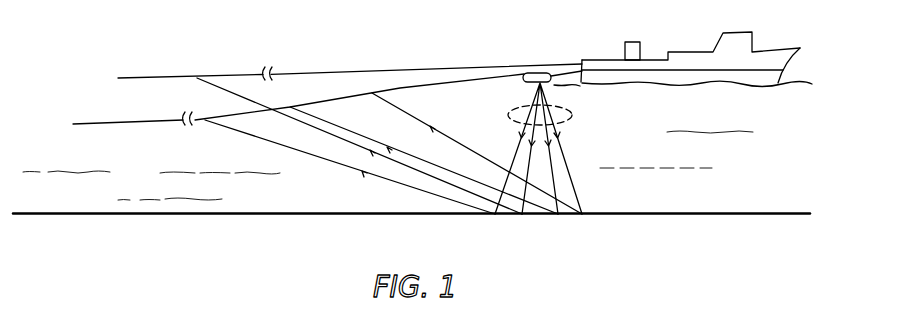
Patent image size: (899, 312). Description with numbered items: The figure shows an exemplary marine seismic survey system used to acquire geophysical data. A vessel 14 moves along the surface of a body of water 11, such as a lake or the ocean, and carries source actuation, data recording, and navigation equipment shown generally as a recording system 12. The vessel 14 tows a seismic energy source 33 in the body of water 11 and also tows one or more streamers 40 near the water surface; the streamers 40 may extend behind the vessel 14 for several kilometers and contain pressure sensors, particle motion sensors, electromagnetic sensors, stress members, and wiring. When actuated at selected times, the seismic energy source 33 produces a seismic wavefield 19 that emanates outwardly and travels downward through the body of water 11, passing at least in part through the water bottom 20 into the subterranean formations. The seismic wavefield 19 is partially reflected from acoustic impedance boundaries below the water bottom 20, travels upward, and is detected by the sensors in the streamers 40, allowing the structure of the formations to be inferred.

The body of water 11 is at (769, 104).
The recording system 12 is at (631, 41).
The vessel 14 is at (775, 51).
The seismic wavefield 19 is at (575, 112).
The water bottom 20 is at (88, 216).
The seismic energy source 33 is at (535, 72).
The streamers 40 is at (119, 76).